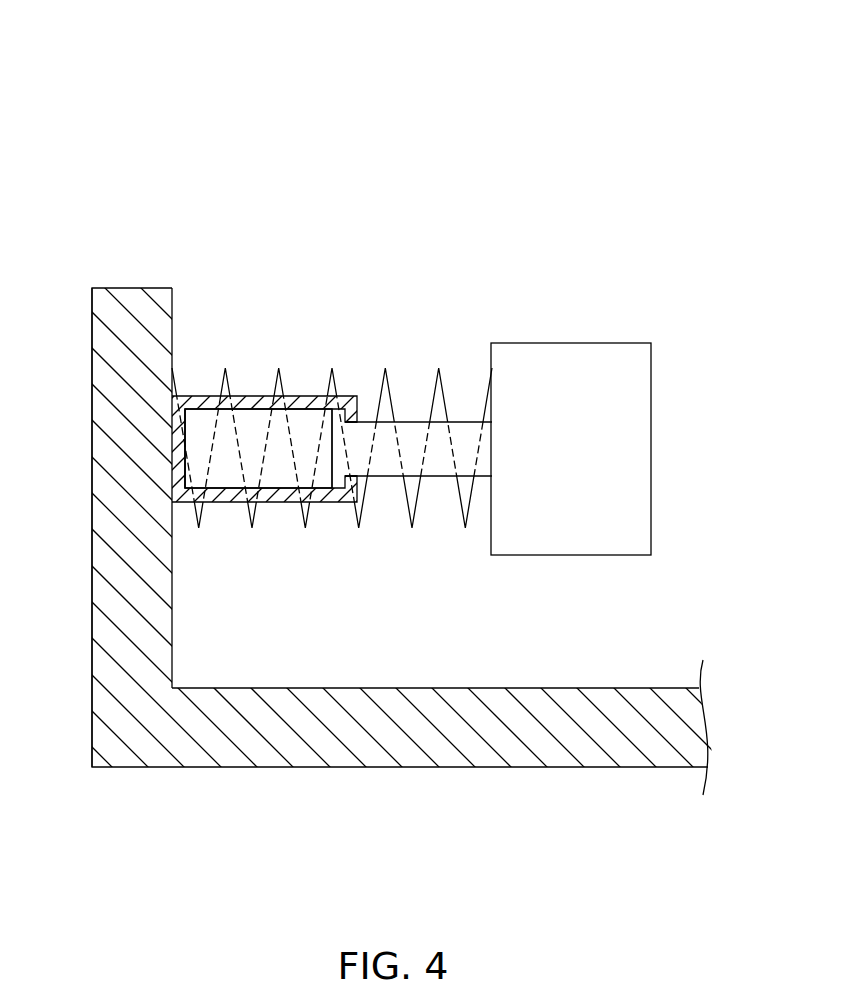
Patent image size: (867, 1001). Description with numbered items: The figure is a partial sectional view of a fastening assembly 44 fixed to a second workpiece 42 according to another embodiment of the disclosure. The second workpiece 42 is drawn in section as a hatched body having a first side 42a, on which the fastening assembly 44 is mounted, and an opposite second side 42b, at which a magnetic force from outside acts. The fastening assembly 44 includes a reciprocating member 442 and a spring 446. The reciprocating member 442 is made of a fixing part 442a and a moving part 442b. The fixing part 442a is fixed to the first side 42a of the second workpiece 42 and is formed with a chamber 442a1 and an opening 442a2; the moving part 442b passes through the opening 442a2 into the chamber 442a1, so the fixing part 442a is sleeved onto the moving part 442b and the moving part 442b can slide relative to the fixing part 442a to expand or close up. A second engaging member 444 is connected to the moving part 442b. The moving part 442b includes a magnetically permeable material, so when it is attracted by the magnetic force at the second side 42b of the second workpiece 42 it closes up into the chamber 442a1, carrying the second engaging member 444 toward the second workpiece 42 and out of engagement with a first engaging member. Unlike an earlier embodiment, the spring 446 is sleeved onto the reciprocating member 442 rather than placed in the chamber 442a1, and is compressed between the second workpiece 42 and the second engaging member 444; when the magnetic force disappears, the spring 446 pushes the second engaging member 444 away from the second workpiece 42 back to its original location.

The fastening assembly 44 is at (452, 162).
The second workpiece 42 is at (619, 723).
The first side 42a is at (173, 605).
The second side 42b is at (92, 605).
The reciprocating member 442 is at (433, 267).
The fixing part 442a is at (317, 394).
The chamber 442a1 is at (265, 478).
The opening 442a2 is at (353, 484).
The moving part 442b is at (407, 438).
The second engaging member 444 is at (559, 385).
The spring 446 is at (233, 370).